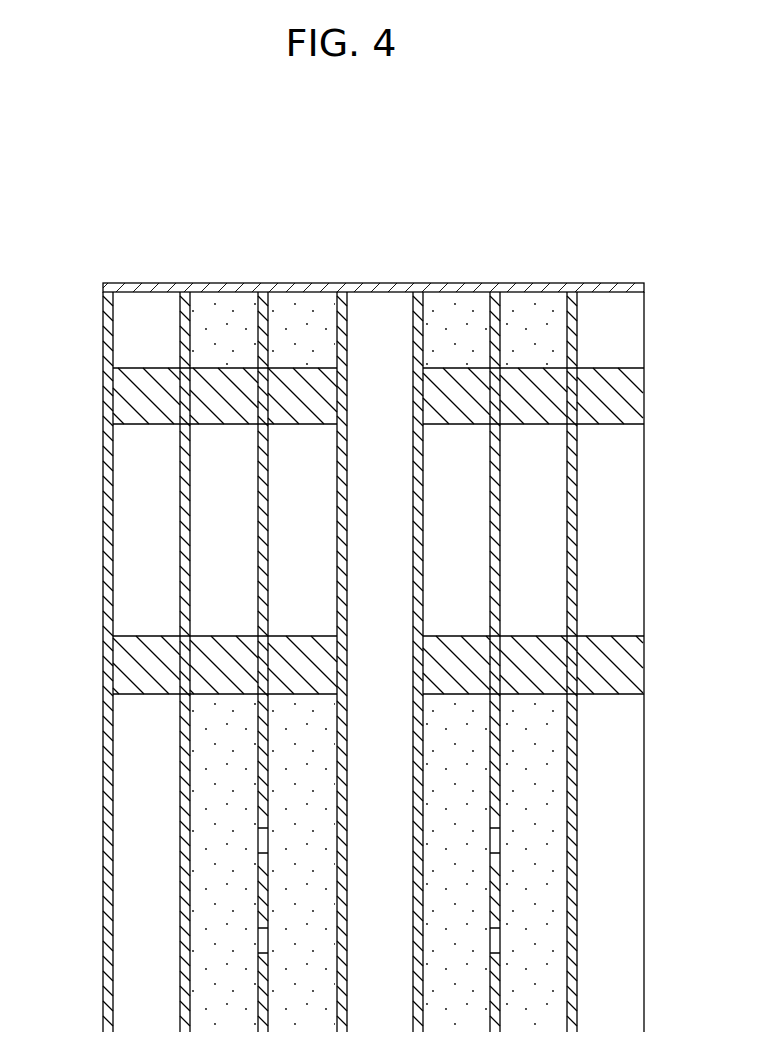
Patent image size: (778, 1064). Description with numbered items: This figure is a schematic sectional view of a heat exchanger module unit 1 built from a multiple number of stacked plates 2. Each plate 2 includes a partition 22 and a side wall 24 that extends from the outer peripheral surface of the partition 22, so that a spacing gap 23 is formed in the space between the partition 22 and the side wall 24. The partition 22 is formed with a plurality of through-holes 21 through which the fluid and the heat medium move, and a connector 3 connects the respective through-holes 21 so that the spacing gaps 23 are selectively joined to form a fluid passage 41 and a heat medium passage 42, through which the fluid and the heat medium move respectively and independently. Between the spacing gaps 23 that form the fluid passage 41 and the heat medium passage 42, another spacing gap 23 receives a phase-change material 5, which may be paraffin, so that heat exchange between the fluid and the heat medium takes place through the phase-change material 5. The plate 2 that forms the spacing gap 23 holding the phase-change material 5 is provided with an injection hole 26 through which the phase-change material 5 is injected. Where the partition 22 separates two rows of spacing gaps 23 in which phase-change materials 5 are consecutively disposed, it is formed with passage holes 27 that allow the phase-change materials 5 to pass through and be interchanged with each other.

The heat exchanger module unit 1 is at (178, 172).
The plate 2 is at (100, 281).
The connector 3 is at (298, 405).
The phase-change material 5 is at (463, 322).
The through-holes 21 is at (107, 444).
The partition 22 is at (108, 832).
The spacing gap 23 is at (115, 777).
The side wall 24 is at (146, 287).
The injection hole 26 is at (199, 292).
The passage holes 27 is at (262, 845).
The fluid passage 41 is at (391, 337).
The heat medium passage 42 is at (610, 350).